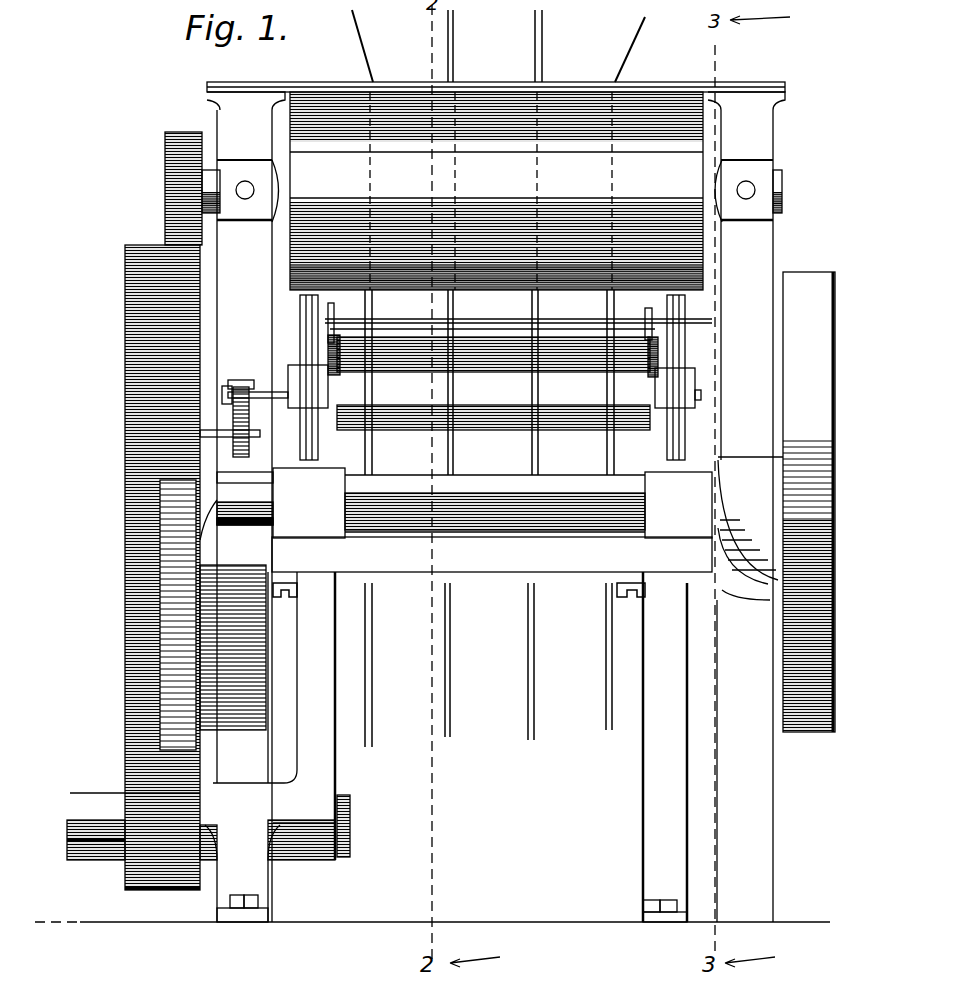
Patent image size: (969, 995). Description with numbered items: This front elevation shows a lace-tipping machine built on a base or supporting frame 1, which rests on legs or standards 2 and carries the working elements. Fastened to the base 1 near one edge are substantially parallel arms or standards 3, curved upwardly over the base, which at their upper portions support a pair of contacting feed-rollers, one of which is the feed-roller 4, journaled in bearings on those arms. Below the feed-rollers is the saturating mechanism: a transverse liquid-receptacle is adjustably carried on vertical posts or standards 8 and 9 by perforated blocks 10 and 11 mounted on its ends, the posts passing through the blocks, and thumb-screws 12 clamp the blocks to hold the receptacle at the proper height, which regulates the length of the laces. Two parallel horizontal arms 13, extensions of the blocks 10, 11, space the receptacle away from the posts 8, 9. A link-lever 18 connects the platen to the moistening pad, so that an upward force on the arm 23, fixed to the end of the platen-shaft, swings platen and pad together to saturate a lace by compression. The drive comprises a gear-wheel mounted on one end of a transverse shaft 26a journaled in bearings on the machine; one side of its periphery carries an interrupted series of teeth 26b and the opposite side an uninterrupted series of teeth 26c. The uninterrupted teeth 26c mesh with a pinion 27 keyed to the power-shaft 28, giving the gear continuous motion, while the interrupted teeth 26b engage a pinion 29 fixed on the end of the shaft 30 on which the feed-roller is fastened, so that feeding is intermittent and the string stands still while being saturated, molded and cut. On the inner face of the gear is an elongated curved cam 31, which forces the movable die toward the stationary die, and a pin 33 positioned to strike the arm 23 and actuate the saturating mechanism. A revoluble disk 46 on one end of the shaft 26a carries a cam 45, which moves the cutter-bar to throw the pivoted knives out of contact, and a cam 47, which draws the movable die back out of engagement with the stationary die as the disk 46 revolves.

The base or supporting frame 1 is at (492, 554).
The legs or standards 2 is at (340, 768).
The arms or standards 3 is at (495, 507).
The feed-roller 4 is at (497, 150).
The vertical post or standard 8 is at (342, 302).
The vertical post or standard 9 is at (668, 305).
The perforated block 10 is at (686, 368).
The perforated block 11 is at (290, 362).
The thumb-screw 12 is at (290, 390).
The horizontal arms 13 is at (340, 380).
The link-lever 18 is at (328, 325).
The arm 23 is at (233, 412).
The shaft 26a is at (456, 504).
The interrupted series of teeth 26b is at (185, 800).
The uninterrupted series of teeth 26c is at (125, 630).
The pinion 27 is at (160, 885).
The power-shaft 28 is at (92, 848).
The pinion 29 is at (165, 178).
The shaft 30 is at (202, 200).
The elongated curved cam 31 is at (233, 647).
The pin 33 is at (200, 433).
The cam 45 is at (744, 583).
The revoluble disk 46 is at (812, 282).
The cam 47 is at (750, 518).